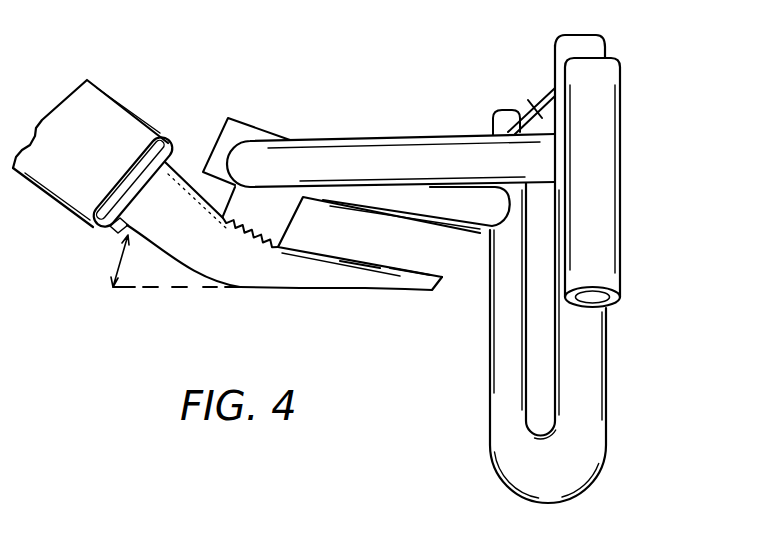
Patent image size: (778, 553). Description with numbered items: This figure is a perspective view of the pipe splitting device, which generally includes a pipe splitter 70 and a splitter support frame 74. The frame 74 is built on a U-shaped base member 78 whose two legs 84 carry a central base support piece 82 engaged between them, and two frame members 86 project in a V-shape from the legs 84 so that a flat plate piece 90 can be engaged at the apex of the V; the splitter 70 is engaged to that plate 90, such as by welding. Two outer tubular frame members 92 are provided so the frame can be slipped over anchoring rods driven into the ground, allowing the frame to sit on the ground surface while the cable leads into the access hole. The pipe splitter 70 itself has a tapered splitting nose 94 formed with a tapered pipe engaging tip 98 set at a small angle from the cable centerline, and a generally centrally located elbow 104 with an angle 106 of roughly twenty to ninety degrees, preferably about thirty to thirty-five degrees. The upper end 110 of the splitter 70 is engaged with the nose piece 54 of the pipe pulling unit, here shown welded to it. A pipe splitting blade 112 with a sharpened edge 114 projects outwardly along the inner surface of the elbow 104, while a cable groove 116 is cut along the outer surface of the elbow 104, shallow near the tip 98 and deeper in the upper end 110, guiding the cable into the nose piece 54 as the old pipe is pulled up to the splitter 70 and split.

The nose piece 54 is at (160, 157).
The pipe splitter 70 is at (275, 285).
The splitter support frame 74 is at (321, 160).
The U-shaped base member 78 is at (522, 472).
The central base support piece 82 is at (532, 104).
The legs 84 is at (491, 332).
The frame members 86 is at (436, 146).
The flat plate piece 90 is at (278, 216).
The outer tubular frame members 92 is at (605, 183).
The tapered splitting nose 94 is at (347, 281).
The tapered pipe engaging tip 98 is at (434, 291).
The elbow 104 is at (234, 283).
The angle 106 is at (115, 262).
The upper end 110 is at (182, 237).
The pipe splitting blade 112 is at (351, 259).
The sharpened edge 114 is at (402, 241).
The cable groove 116 is at (385, 283).